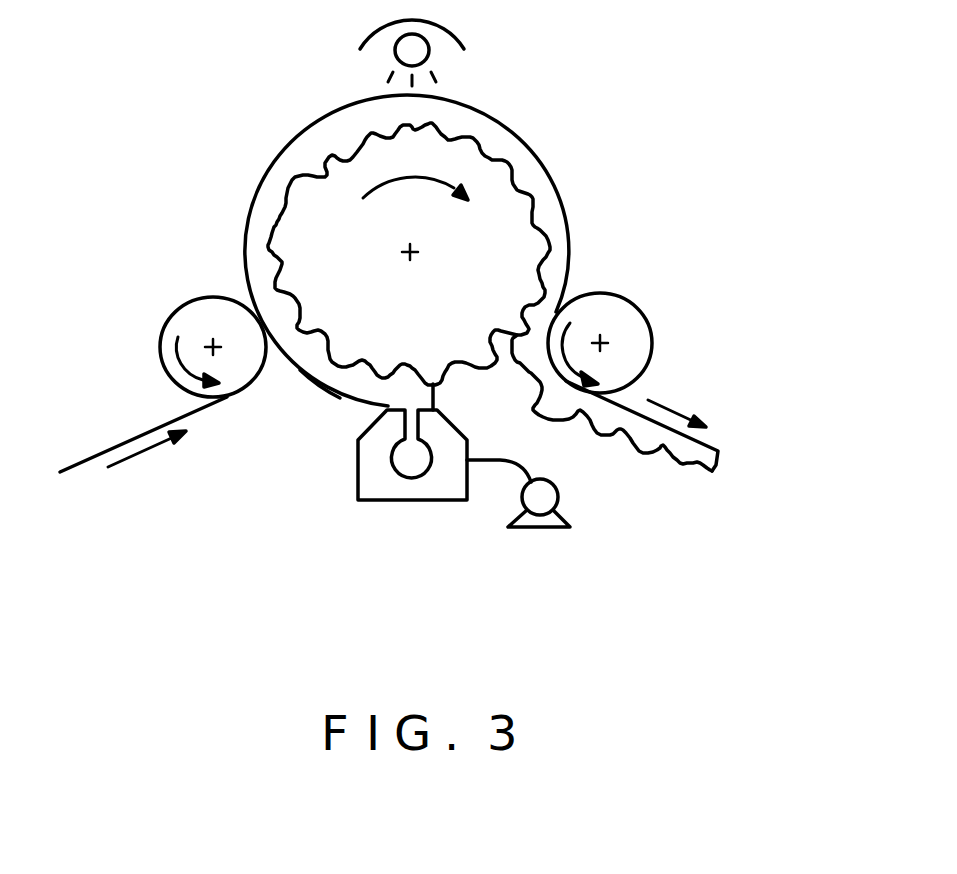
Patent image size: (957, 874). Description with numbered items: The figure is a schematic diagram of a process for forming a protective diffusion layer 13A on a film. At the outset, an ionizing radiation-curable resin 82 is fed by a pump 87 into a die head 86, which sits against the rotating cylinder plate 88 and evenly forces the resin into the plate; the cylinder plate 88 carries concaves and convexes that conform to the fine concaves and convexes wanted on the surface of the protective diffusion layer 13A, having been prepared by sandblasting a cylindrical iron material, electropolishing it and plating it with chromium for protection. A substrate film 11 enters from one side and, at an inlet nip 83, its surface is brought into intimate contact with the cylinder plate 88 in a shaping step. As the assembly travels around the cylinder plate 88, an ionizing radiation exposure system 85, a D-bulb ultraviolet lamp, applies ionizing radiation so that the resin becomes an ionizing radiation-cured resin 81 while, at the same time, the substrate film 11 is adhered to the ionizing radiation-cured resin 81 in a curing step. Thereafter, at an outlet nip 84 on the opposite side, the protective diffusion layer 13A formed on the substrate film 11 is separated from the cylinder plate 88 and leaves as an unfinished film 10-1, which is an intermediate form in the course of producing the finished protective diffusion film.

The ionizing radiation-cured resin 81 is at (523, 150).
The cylinder plate 88 is at (508, 223).
The ionizing radiation-curable resin 82 is at (321, 384).
The ionizing radiation exposure system 85 is at (455, 36).
The inlet nip 83 is at (182, 307).
The outlet nip 84 is at (643, 312).
The substrate film 11 is at (100, 452).
The unfinished film 10-1 is at (723, 428).
The protective diffusion layer 13A is at (684, 470).
The die head 86 is at (412, 500).
The pump 87 is at (545, 530).